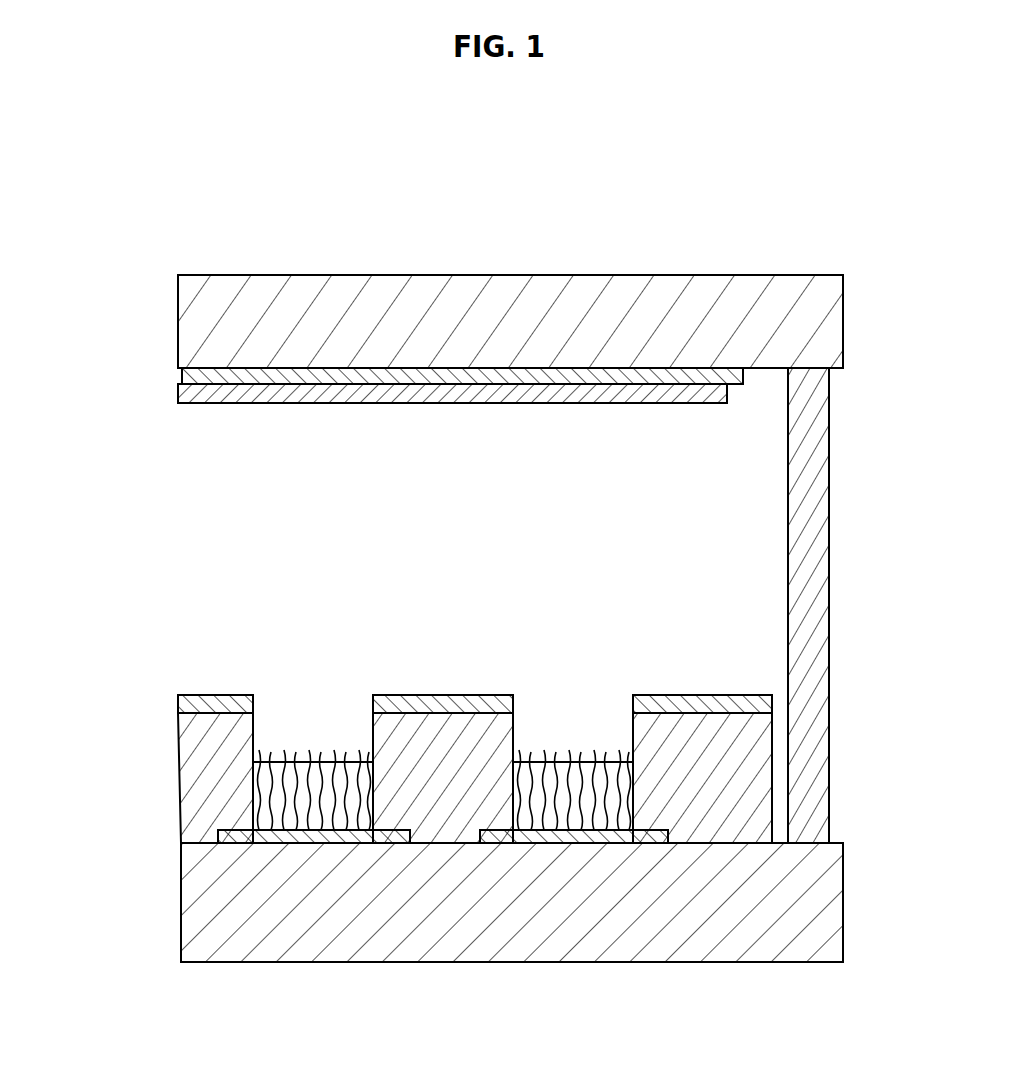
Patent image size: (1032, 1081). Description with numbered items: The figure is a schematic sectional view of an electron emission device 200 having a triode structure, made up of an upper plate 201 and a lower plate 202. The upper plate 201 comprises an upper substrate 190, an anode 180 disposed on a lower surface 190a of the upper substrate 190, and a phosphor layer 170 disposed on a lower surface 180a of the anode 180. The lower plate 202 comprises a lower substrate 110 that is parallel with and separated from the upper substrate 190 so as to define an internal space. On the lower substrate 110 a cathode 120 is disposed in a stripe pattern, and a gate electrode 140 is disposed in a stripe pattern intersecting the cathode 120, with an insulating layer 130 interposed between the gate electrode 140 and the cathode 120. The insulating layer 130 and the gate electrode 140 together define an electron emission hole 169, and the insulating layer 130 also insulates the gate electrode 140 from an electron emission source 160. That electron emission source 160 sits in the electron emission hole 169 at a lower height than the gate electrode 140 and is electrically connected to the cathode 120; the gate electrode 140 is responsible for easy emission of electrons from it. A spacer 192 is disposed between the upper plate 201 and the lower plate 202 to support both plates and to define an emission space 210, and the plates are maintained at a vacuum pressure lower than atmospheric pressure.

The lower substrate 110 is at (196, 881).
The cathode 120 is at (216, 839).
The insulating layer 130 is at (186, 777).
The gate electrode 140 is at (178, 703).
The electron emission source 160 is at (310, 830).
The electron emission hole 169 is at (333, 719).
The phosphor layer 170 is at (544, 395).
The anode 180 is at (410, 378).
The lower surface of the anode 180a is at (482, 384).
The upper substrate 190 is at (264, 275).
The lower surface of the upper substrate 190a is at (340, 366).
The spacer 192 is at (829, 609).
The electron emission device 200 is at (92, 455).
The upper plate 201 is at (155, 382).
The lower plate 202 is at (162, 685).
The emission space 210 is at (513, 546).